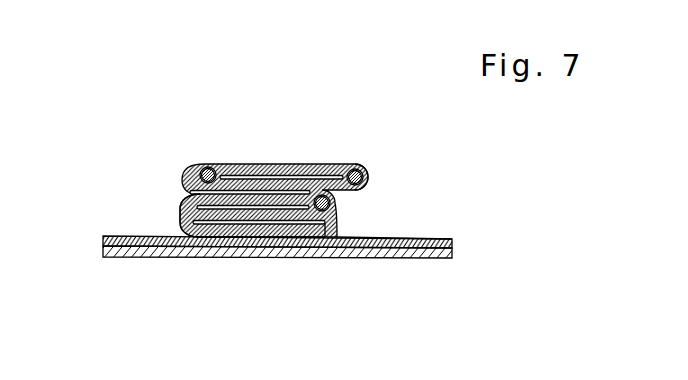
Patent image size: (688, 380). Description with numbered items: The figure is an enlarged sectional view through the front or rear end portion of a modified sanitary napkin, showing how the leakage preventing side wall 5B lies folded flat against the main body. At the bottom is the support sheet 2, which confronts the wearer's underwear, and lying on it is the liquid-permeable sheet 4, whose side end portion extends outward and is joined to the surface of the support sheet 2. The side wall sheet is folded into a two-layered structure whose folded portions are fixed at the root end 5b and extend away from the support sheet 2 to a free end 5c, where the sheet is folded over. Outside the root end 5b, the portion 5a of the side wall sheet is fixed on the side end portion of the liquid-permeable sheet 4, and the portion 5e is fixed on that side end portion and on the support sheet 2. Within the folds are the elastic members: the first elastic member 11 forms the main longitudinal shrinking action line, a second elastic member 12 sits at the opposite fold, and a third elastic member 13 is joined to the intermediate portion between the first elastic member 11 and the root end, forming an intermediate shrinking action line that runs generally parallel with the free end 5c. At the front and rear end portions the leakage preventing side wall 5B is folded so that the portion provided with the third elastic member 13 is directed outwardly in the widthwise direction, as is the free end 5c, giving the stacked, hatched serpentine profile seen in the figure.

The support sheet 2 is at (140, 258).
The liquid-permeable sheet 4 is at (128, 236).
The leakage preventing side wall 5B is at (336, 196).
The portion extending outwardly of the root end 5a is at (276, 228).
The root end 5b is at (181, 234).
The free end 5c is at (371, 173).
The portion extending outwardly of the root end 5e is at (434, 240).
The first elastic member 11 is at (211, 164).
The second elastic member 12 is at (354, 164).
The third elastic member 13 is at (336, 206).